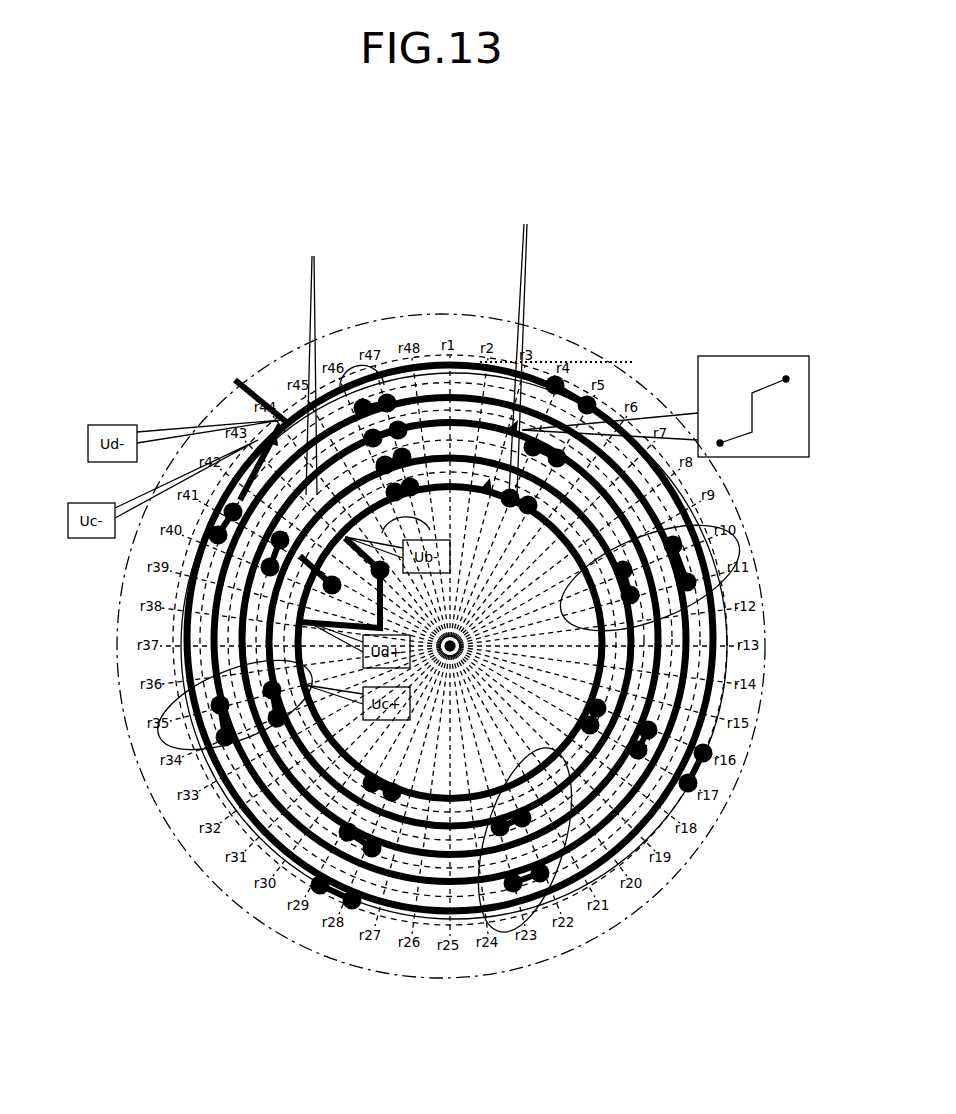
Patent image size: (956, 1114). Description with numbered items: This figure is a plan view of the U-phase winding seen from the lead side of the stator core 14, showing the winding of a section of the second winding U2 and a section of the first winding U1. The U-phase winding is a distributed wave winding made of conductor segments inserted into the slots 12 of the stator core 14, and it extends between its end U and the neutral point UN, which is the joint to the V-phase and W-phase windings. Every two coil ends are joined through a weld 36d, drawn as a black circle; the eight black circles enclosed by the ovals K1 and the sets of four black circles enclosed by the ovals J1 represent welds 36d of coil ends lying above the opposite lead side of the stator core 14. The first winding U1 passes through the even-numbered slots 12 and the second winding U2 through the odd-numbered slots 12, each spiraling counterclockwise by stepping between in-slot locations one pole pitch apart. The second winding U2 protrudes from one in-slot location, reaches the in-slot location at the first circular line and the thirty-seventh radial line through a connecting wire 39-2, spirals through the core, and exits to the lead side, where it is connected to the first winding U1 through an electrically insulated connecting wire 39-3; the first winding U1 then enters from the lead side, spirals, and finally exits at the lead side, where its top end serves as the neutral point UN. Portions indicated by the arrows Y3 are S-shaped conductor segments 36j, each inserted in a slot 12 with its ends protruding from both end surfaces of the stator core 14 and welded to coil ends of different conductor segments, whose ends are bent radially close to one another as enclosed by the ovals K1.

The slot 12 is at (452, 368).
The stator core 14 is at (418, 315).
The oval K1 is at (352, 362).
The arrow Y3 is at (417, 346).
The end of U-phase winding U is at (567, 362).
The first winding U1 is at (245, 382).
The second winding U2 is at (248, 838).
The neutral point UN is at (240, 401).
The oval J1 is at (742, 552).
The S-shaped conductor segment 36j is at (757, 390).
The weld 36d is at (690, 785).
The connecting wire 39-2 is at (398, 932).
The connecting wire 39-3 is at (215, 592).